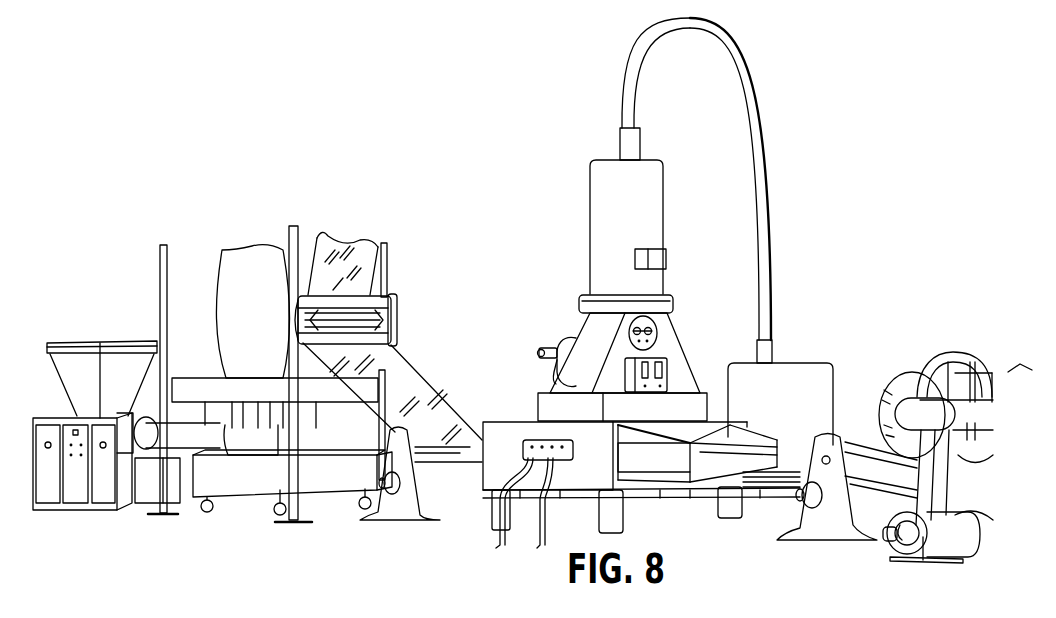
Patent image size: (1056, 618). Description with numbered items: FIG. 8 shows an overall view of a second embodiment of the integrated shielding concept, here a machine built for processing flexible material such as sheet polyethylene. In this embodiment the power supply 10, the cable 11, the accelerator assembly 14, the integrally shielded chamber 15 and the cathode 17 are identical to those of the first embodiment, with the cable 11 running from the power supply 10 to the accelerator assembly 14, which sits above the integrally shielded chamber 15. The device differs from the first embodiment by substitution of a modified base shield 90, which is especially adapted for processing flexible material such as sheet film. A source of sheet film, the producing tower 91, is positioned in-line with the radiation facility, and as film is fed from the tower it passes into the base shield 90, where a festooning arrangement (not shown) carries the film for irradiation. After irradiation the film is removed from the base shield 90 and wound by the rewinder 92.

The power supply 10 is at (812, 363).
The cable 11 is at (772, 220).
The accelerator assembly 14 is at (660, 222).
The integrally shielded chamber 15 is at (673, 348).
The cathode 17 is at (47, 418).
The base shield 90 is at (494, 419).
The producing tower 91 is at (392, 244).
The rewinder 92 is at (993, 355).